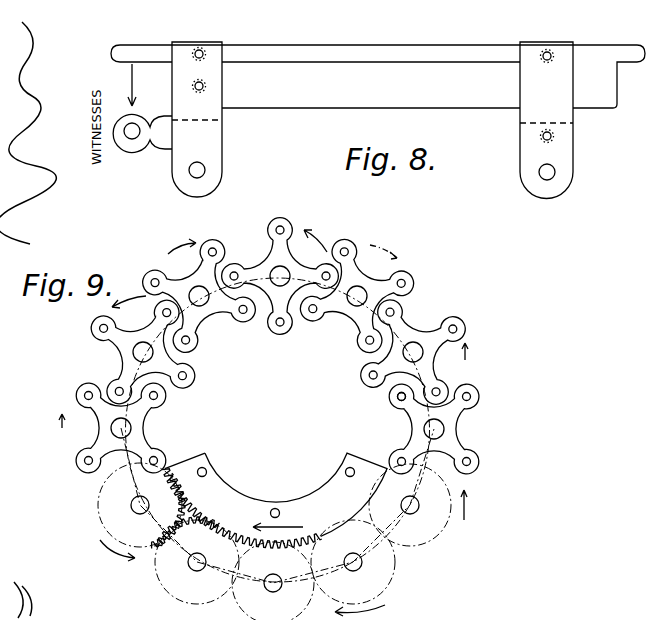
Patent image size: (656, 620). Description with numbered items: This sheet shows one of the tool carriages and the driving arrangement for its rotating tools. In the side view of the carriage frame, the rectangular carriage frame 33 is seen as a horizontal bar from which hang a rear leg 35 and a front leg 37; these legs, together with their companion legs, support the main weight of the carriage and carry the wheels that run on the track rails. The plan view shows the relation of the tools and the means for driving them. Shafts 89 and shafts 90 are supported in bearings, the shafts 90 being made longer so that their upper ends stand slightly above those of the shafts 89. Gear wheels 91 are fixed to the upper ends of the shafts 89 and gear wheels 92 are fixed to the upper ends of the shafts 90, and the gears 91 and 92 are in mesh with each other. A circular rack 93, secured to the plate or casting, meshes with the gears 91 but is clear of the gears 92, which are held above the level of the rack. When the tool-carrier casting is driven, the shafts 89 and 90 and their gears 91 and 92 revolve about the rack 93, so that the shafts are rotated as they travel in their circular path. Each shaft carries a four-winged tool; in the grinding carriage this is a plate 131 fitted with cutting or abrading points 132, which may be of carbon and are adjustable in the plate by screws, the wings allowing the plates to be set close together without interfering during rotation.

In FIG. 8, the rectangular carriage frame 33 is at (378, 76).
In FIG. 8, the rear leg 35 is at (222, 156).
In FIG. 8, the front leg 37 is at (560, 156).
In FIG. 9, the shaft 89 is at (408, 346).
In FIG. 9, the shaft 90 is at (197, 571).
In FIG. 9, the gear wheel 91 is at (112, 525).
In FIG. 9, the gear wheel 92 is at (168, 568).
In FIG. 9, the circular rack 93 is at (212, 507).
In FIG. 9, the plate 131 is at (165, 400).
In FIG. 9, the cutting or abrading points 132 is at (400, 397).